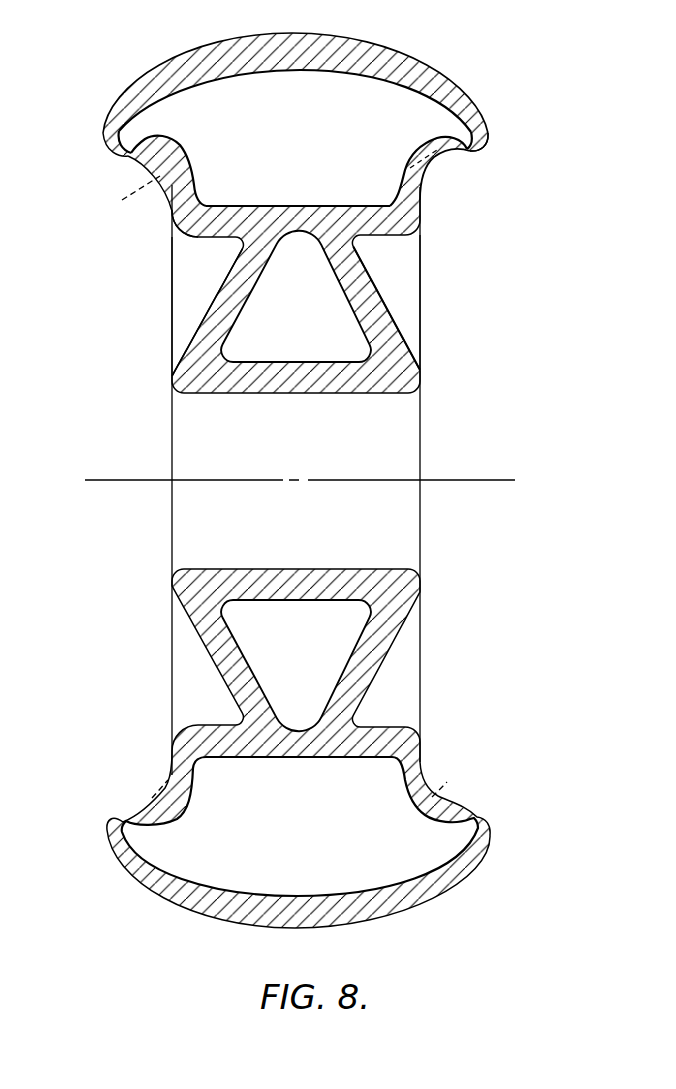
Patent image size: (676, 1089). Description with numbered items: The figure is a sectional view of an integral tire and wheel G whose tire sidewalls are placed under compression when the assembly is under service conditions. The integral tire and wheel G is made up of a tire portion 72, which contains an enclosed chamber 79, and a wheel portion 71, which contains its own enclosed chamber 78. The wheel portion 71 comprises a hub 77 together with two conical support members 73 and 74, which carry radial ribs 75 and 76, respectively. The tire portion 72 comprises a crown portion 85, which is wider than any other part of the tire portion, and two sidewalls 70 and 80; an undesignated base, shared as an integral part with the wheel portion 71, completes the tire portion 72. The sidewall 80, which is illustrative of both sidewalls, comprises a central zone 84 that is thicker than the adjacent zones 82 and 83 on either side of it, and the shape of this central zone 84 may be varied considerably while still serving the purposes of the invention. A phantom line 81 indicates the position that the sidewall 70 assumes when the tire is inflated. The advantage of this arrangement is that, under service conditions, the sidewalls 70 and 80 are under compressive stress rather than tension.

The integral tire and wheel G is at (443, 77).
The sidewall 70 is at (177, 143).
The wheel portion 71 is at (423, 261).
The tire portion 72 is at (197, 219).
The conical support member 73 is at (227, 293).
The conical support member 74 is at (364, 303).
The radial rib 75 is at (187, 316).
The radial rib 76 is at (405, 320).
The hub 77 is at (213, 383).
The enclosed chamber 78 is at (308, 336).
The enclosed chamber 79 is at (310, 137).
The sidewall 80 is at (417, 147).
The phantom line 81 is at (125, 195).
The adjacent zone 82 is at (416, 192).
The adjacent zone 83 is at (488, 139).
The central zone 84 is at (423, 159).
The crown portion 85 is at (140, 93).